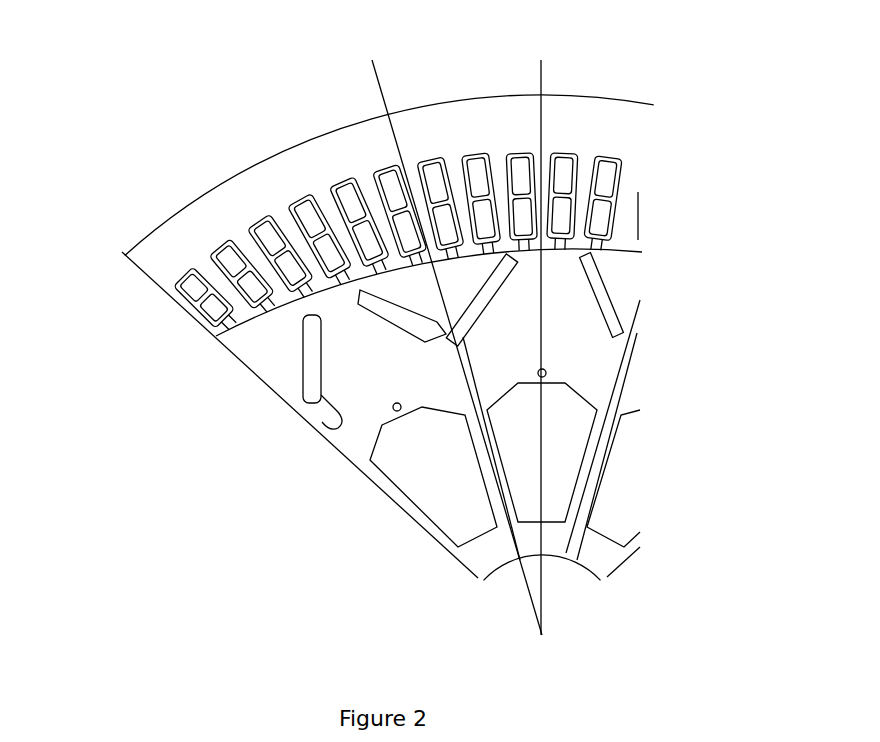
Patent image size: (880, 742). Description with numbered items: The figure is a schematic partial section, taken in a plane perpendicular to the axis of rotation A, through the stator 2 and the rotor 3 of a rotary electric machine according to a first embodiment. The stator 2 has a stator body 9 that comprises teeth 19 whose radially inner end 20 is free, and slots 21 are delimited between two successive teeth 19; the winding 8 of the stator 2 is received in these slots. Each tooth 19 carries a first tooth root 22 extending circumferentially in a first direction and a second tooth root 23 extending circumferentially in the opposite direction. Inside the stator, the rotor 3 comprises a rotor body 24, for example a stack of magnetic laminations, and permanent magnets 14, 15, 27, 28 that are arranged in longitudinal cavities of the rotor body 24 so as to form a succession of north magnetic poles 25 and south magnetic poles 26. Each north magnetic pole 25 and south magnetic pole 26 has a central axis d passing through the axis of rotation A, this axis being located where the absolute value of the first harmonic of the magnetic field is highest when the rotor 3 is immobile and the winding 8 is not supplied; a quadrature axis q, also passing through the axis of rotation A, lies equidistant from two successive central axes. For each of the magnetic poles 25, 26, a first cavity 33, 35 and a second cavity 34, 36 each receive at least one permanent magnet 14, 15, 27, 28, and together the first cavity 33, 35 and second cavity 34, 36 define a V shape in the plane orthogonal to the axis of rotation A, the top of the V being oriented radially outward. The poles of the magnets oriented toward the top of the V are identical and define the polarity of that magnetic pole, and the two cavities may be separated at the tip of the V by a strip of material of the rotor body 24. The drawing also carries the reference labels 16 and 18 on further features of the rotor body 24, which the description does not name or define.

The stator 2 is at (126, 207).
The rotor 3 is at (336, 530).
The winding 8 is at (272, 247).
The stator body 9 is at (190, 213).
The permanent magnet 14 is at (477, 319).
The permanent magnet 15 is at (440, 324).
The flux barrier 16 is at (442, 343).
The pole piece 18 is at (475, 378).
The tooth 19 is at (587, 162).
The radially inner end 20 is at (592, 322).
The slot 21 is at (610, 200).
The first tooth root 22 is at (573, 232).
The second tooth root 23 is at (597, 277).
The rotor body 24 is at (362, 452).
The north magnetic pole 25 is at (450, 267).
The south magnetic pole 26 is at (625, 268).
The permanent magnet 27 is at (303, 374).
The permanent magnet 28 is at (580, 243).
The first cavity 33 is at (368, 302).
The second cavity 34 is at (516, 258).
The first cavity 35 is at (568, 266).
The second cavity 36 is at (468, 358).
The central axis d is at (383, 97).
The quadrature axis q is at (541, 72).
The axis of rotation A is at (542, 635).